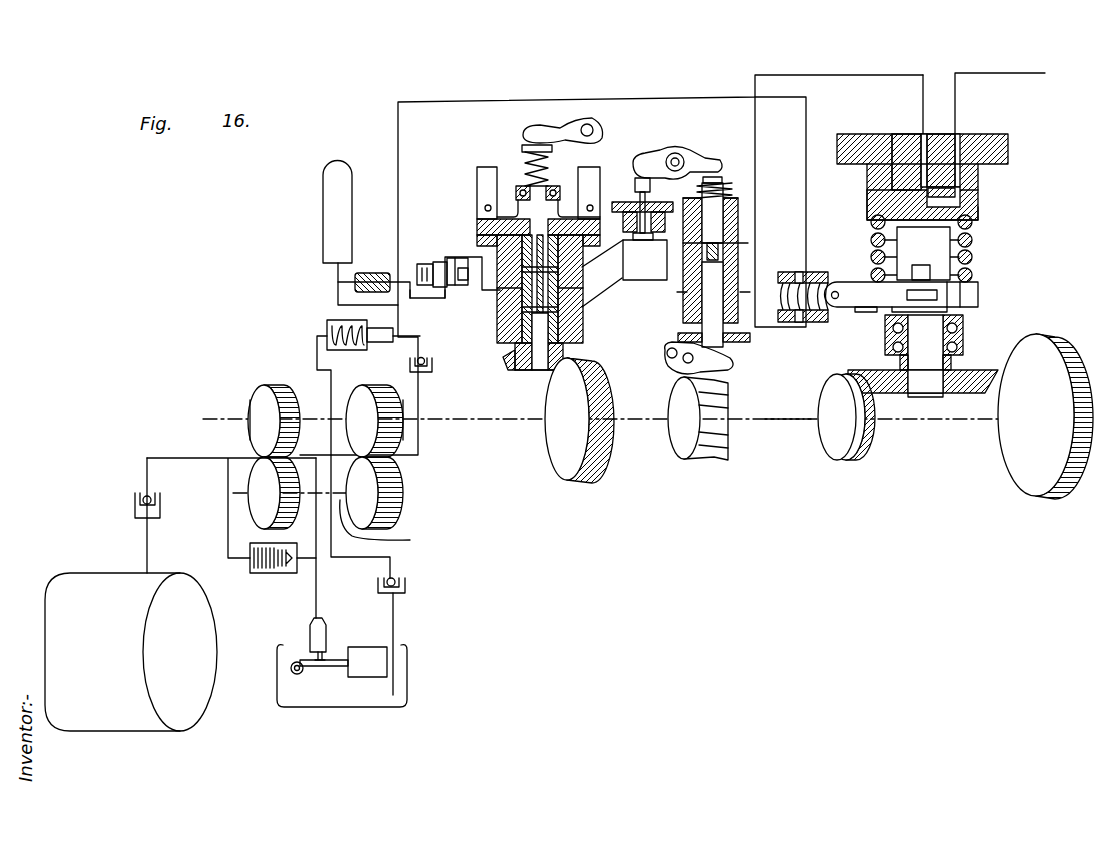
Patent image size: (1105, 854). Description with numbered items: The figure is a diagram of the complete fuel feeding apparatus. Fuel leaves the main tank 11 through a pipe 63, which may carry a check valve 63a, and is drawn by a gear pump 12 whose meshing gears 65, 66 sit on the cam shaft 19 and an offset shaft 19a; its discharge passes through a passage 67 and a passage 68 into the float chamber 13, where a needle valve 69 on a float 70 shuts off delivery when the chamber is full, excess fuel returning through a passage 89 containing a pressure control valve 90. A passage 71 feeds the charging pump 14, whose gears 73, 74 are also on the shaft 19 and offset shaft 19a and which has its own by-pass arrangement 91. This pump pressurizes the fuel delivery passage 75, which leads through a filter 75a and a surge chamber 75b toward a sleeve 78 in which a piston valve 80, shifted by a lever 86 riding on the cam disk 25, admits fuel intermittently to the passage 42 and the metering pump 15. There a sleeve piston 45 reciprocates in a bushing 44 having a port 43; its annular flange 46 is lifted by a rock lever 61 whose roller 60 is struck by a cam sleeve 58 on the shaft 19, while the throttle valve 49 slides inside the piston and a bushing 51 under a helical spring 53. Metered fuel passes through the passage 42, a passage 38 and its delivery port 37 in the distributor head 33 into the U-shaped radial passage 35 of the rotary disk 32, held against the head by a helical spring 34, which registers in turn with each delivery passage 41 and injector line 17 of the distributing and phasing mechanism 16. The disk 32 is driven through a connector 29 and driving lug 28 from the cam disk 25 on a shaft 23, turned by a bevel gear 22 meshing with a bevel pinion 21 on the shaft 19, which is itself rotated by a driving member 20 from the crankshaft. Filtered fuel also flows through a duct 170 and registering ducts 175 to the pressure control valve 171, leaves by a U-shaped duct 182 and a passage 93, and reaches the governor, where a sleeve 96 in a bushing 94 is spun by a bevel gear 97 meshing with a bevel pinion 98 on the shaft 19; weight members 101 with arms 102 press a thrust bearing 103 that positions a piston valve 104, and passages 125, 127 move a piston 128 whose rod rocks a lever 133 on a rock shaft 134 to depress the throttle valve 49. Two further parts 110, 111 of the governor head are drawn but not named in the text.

The main tank 11 is at (131, 652).
The gear pump 12 is at (249, 400).
The float chamber 13 is at (321, 692).
The charging pump 14 is at (410, 438).
The fuel metering pump 15 is at (744, 214).
The distributing and phasing mechanism 16 is at (982, 175).
The injector line 17 is at (955, 103).
The combination cam and driving shaft 19 is at (783, 420).
The offset shaft 19a is at (394, 524).
The driving member 20 is at (1058, 480).
The bevel pinion 21 is at (841, 460).
The bevel gear 22 is at (965, 393).
The shaft 23 is at (925, 390).
The cam disk 25 is at (980, 293).
The driving lug 28 is at (926, 272).
The connector 29 is at (936, 250).
The rotary disk 32 is at (978, 214).
The distributor head 33 is at (1008, 145).
The helical spring 34 is at (972, 238).
The U-shaped radial passage 35 is at (978, 198).
The delivery port 37 is at (916, 150).
The passage 38 is at (923, 93).
The delivery passage 41 is at (962, 145).
The passage 42 is at (755, 137).
The port 43 is at (738, 250).
The bushing 44 is at (685, 302).
The sleeve piston 45 is at (683, 318).
The annular flange 46 is at (738, 342).
The throttle valve 49 is at (715, 208).
The bushing 51 is at (740, 224).
The helical spring 53 is at (725, 178).
The cam sleeve 58 is at (694, 455).
The roller 60 is at (681, 381).
The rock lever 61 is at (668, 369).
The pipe 63 is at (147, 480).
The check valve 63a is at (135, 511).
The gear 65 is at (268, 388).
The gear 66 is at (262, 503).
The passage 67 is at (305, 457).
The passage 68 is at (317, 593).
The needle valve 69 is at (312, 628).
The float 70 is at (376, 656).
The passage 71 is at (395, 612).
The gear 73 is at (400, 410).
The gear 74 is at (403, 486).
The fuel delivery passage 75 is at (398, 128).
The filter 75a is at (372, 273).
The surge chamber 75b is at (330, 222).
The sleeve 78 is at (813, 274).
The piston valve 80 is at (812, 318).
The lever 86 is at (847, 307).
The passage 89 is at (228, 541).
The pressure control valve 90 is at (285, 572).
The by-pass arrangement 91 is at (331, 392).
The passage 93 is at (488, 298).
The bushing 94 is at (503, 335).
The sleeve 96 is at (583, 320).
The bevel gear 97 is at (513, 370).
The bevel pinion 98 is at (580, 478).
The weight members 101 is at (484, 168).
The arm 102 is at (505, 217).
The thrust bearing 103 is at (556, 190).
The piston valve 104 is at (535, 192).
The lever mechanism 110 is at (555, 125).
The lever 111 is at (595, 126).
The passage 125 is at (590, 303).
The passage 127 is at (607, 256).
The piston 128 is at (645, 260).
The rock lever 133 is at (640, 165).
The rock shaft 134 is at (676, 153).
The duct 170 is at (428, 298).
The pressure control valve 171 is at (430, 260).
The registering ducts 175 is at (455, 287).
The U-shaped duct 182 is at (450, 258).